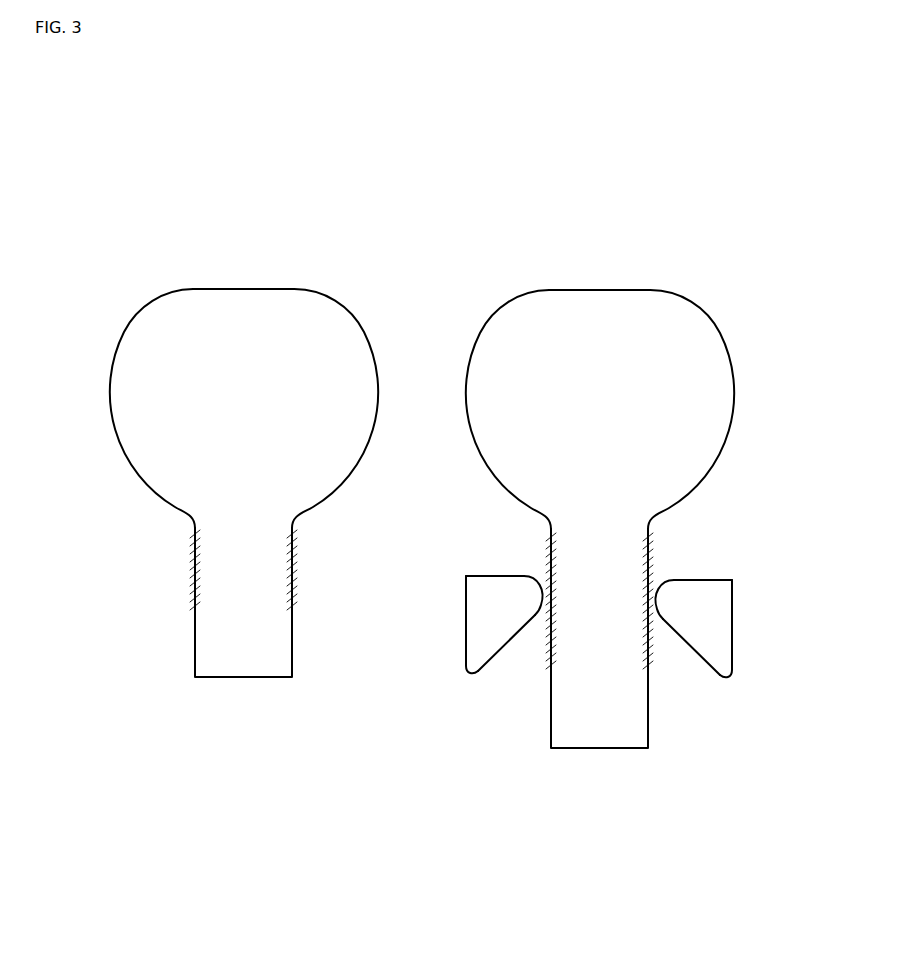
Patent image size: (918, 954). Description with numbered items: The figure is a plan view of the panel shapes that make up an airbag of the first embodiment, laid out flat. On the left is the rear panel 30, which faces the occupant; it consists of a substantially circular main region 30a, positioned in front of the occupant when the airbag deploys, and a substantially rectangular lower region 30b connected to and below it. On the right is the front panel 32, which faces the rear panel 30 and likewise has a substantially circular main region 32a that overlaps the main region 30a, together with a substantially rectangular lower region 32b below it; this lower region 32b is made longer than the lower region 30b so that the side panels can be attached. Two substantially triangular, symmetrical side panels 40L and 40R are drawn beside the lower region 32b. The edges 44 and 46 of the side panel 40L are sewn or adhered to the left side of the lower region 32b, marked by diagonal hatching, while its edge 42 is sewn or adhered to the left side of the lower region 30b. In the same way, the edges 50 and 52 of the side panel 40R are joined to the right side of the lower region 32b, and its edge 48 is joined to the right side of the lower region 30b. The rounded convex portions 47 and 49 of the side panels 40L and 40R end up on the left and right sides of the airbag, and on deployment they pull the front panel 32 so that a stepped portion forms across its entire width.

The rear panel 30 is at (244, 478).
The main region of rear panel 30a is at (157, 332).
The lower region of rear panel 30b is at (252, 667).
The front panel 32 is at (600, 513).
The main region of front panel 32a is at (510, 337).
The lower region of front panel 32b is at (603, 713).
The side panel 40L is at (467, 627).
The side panel 40R is at (733, 657).
The edge of side panel 40L 42 is at (466, 622).
The edge of side panel 40L 44 is at (487, 576).
The edge of side panel 40L 46 is at (505, 648).
The convex portion 47 is at (530, 590).
The edge of side panel 40R 48 is at (765, 628).
The convex portion 49 is at (668, 590).
The edge of side panel 40R 50 is at (715, 580).
The edge of side panel 40R 52 is at (687, 650).